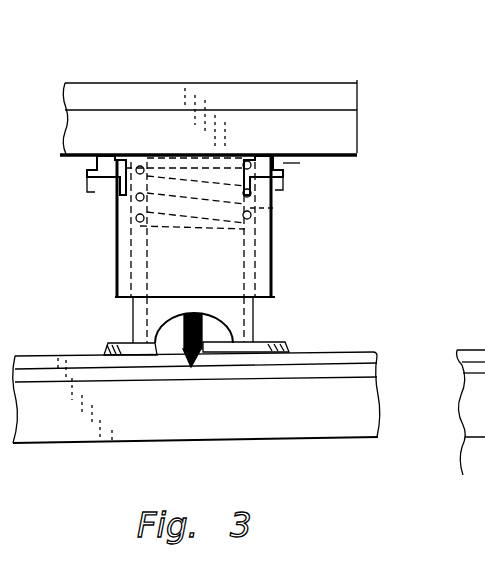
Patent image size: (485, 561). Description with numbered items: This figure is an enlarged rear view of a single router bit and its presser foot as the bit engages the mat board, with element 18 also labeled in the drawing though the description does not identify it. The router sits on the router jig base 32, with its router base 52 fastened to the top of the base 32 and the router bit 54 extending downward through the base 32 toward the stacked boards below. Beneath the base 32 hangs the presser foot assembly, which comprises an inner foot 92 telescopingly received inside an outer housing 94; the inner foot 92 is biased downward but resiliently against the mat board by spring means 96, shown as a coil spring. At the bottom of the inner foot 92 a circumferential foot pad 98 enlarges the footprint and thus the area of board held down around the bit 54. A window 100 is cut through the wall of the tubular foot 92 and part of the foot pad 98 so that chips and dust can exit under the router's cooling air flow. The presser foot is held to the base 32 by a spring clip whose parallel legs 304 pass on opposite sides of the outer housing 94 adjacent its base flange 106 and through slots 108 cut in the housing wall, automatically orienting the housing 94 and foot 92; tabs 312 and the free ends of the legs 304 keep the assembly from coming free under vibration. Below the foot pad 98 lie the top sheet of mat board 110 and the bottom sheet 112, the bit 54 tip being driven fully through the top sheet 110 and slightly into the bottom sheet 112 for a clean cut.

The base 18 is at (252, 417).
The base 32 is at (343, 128).
The router base 52 is at (325, 92).
The router bit 54 is at (230, 320).
The inner foot 92 is at (250, 338).
The outer housing 94 is at (276, 240).
The spring means 96 is at (276, 208).
The foot pad 98 is at (128, 343).
The window 100 is at (172, 333).
The base flange 106 is at (300, 163).
The slots 108 is at (274, 180).
The top sheet of mat board 110 is at (355, 350).
The bottom sheet 112 is at (340, 371).
The legs 304 is at (100, 156).
The tabs 312 is at (272, 153).